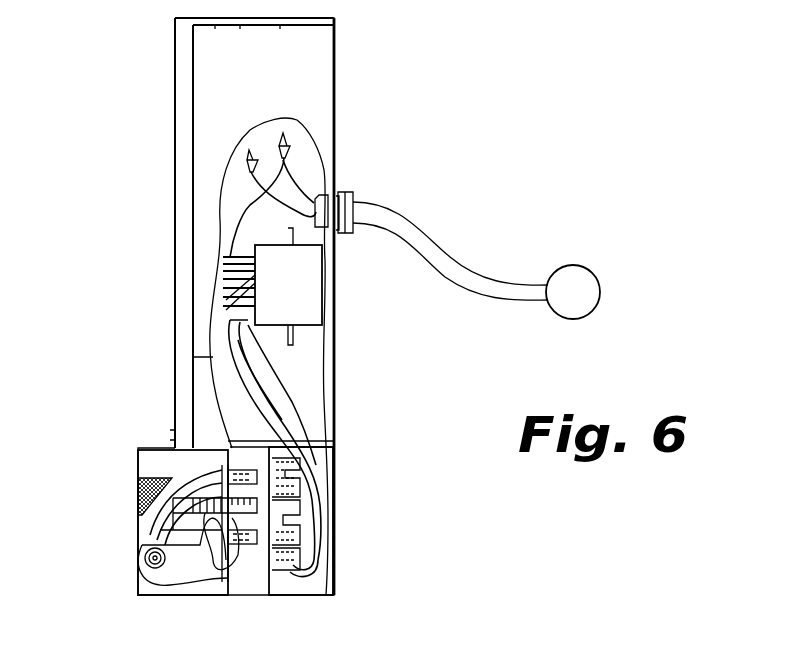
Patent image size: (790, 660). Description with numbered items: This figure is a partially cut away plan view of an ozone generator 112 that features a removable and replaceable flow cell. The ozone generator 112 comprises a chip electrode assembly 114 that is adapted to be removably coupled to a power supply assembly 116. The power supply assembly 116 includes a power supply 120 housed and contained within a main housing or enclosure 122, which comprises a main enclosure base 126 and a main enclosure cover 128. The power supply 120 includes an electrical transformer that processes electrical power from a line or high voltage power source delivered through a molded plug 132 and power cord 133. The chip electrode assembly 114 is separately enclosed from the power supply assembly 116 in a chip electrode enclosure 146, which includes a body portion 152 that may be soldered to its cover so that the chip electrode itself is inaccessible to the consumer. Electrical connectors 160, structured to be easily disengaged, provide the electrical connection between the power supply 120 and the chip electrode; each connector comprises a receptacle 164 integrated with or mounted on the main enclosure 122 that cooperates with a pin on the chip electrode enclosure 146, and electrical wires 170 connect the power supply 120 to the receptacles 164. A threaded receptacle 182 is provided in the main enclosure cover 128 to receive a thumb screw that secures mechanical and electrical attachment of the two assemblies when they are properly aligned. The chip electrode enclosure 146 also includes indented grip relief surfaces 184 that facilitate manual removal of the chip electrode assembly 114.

The ozone generator 112 is at (140, 224).
The chip electrode assembly 114 is at (134, 465).
The power supply assembly 116 is at (345, 157).
The power supply 120 is at (305, 298).
The main housing or enclosure 122 is at (340, 75).
The main enclosure base 126 is at (277, 18).
The main enclosure cover 128 is at (175, 150).
The molded plug 132 is at (602, 283).
The power cord 133 is at (465, 275).
The chip electrode enclosure 146 is at (145, 597).
The body portion 152 is at (137, 527).
The electrical connectors 160 is at (245, 558).
The receptacle 164 is at (292, 562).
The electrical wires 170 is at (300, 388).
The threaded receptacle 182 is at (288, 522).
The grip relief surfaces 184 is at (158, 478).